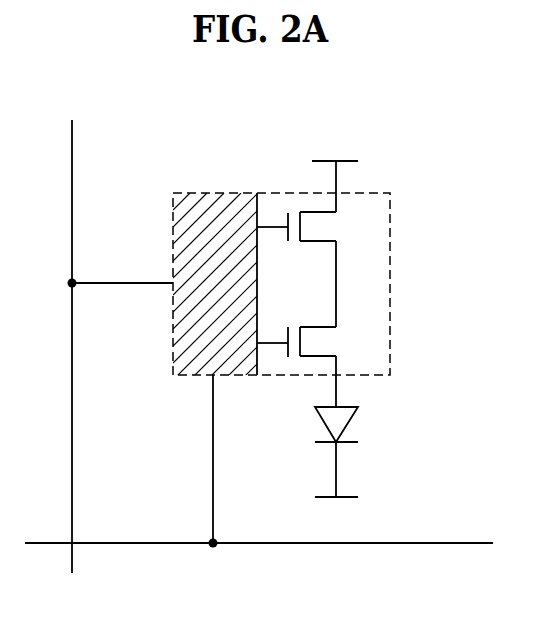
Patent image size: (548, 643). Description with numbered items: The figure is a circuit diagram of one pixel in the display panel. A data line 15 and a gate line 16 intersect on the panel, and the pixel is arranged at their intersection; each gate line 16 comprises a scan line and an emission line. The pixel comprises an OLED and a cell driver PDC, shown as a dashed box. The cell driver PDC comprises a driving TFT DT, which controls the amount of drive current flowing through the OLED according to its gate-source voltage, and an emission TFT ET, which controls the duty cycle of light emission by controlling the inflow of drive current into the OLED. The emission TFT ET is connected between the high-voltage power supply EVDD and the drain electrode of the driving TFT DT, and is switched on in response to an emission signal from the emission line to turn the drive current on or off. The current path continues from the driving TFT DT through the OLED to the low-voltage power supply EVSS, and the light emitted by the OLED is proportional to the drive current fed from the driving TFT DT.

The data line 15 is at (72, 158).
The gate line 16 is at (415, 543).
The cell driver PDC is at (390, 283).
The emission TFT ET is at (308, 269).
The driving TFT DT is at (308, 367).
The element OLED is at (362, 452).
The high-voltage power supply EVDD is at (337, 173).
The low-voltage power supply EVSS is at (336, 512).